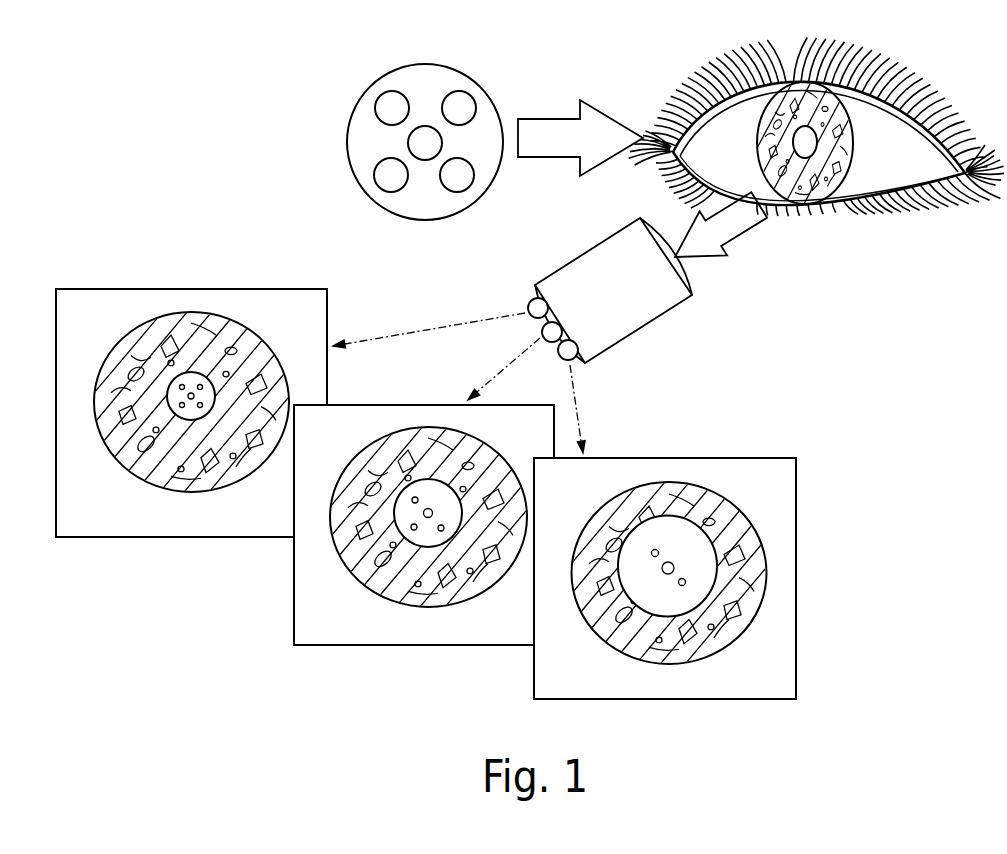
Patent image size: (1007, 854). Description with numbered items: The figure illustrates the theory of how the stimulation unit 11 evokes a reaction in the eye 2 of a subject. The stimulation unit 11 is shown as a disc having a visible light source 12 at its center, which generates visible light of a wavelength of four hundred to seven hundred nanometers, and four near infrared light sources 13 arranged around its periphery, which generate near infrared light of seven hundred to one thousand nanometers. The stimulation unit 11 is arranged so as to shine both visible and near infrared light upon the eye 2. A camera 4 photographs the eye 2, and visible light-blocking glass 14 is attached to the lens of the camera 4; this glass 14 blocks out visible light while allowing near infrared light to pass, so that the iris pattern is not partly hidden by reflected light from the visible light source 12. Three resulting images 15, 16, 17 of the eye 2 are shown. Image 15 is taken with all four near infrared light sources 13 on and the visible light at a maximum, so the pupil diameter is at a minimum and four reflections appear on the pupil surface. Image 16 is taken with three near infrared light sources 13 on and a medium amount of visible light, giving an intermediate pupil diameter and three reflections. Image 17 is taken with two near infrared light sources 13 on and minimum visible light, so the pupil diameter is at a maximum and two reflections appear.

The eye 2 is at (880, 108).
The camera 4 is at (580, 264).
The stimulation unit 11 is at (388, 82).
The visible light source 12 is at (410, 145).
The near infrared light sources 13 is at (373, 186).
The visible light-blocking glass 14 is at (649, 227).
The image 15 is at (90, 298).
The image 16 is at (410, 412).
The image 17 is at (672, 468).